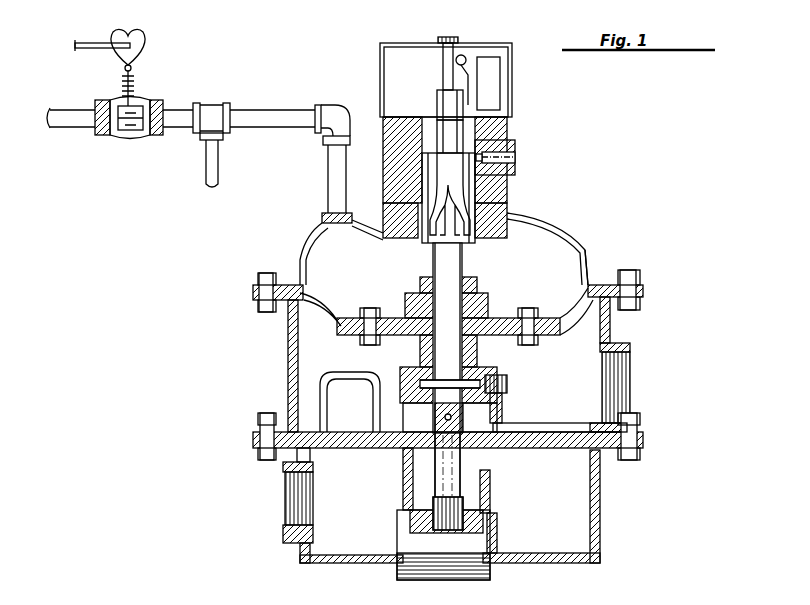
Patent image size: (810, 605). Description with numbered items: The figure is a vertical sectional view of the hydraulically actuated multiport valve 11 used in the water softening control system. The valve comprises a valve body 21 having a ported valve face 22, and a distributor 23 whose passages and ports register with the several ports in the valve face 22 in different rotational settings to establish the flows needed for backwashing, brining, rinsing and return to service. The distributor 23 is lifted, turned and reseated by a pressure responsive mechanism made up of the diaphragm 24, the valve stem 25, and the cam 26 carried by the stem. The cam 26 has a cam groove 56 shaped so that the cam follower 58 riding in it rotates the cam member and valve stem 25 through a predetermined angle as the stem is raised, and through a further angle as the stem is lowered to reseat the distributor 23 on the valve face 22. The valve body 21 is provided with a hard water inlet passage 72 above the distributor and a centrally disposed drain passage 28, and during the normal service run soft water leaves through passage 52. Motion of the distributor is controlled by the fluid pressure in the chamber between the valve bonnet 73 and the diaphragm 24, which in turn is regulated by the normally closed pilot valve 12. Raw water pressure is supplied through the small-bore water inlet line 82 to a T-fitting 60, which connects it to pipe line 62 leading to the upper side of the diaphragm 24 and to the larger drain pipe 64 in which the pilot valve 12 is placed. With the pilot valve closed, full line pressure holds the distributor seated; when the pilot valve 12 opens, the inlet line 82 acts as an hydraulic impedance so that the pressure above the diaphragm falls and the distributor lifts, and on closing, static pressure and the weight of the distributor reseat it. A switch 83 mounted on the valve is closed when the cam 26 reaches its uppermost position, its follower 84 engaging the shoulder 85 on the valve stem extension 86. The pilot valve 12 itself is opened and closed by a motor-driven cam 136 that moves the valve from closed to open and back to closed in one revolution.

The multiport valve 11 is at (595, 247).
The pilot valve 12 is at (116, 142).
The valve body 21 is at (612, 331).
The ported valve face 22 is at (502, 450).
The distributor 23 is at (331, 375).
The diaphragm 24 is at (310, 300).
The valve stem 25 is at (457, 268).
The cam 26 is at (428, 160).
The drain passage 28 is at (410, 478).
The soft water outlet passage 52 is at (290, 536).
The cam groove 56 is at (448, 160).
The cam follower 58 is at (505, 133).
The T-fitting 60 is at (215, 108).
The pipe line 62 is at (268, 109).
The drain pipe 64 is at (178, 127).
The hard water inlet passage 72 is at (632, 388).
The valve bonnet 73 is at (548, 232).
The water inlet line 82 is at (218, 182).
The switch 83 is at (500, 85).
The follower 84 is at (466, 56).
The shoulder 85 is at (445, 88).
The valve stem extension 86 is at (450, 46).
The cam 136 is at (142, 47).